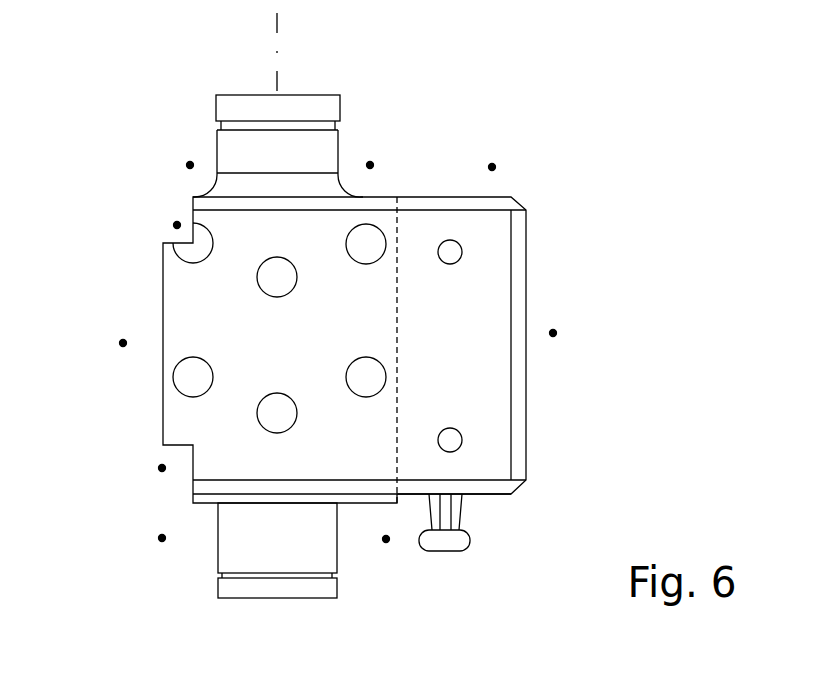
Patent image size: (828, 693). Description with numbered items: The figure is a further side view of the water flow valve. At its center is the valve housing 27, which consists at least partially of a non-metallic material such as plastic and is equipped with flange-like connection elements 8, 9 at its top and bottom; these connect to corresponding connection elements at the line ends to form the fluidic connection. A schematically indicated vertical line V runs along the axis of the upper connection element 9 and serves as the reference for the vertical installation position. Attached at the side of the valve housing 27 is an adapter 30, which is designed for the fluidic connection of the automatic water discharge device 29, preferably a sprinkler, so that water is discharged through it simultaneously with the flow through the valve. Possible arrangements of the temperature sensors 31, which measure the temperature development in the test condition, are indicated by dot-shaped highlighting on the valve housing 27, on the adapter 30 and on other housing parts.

The connection element 8 is at (237, 550).
The connection element 9 is at (232, 145).
The valve housing 27 is at (222, 292).
The water discharge device 29 is at (462, 542).
The adapter 30 is at (492, 267).
The temperature sensor 31 is at (177, 225).
The vertical line V is at (277, 30).